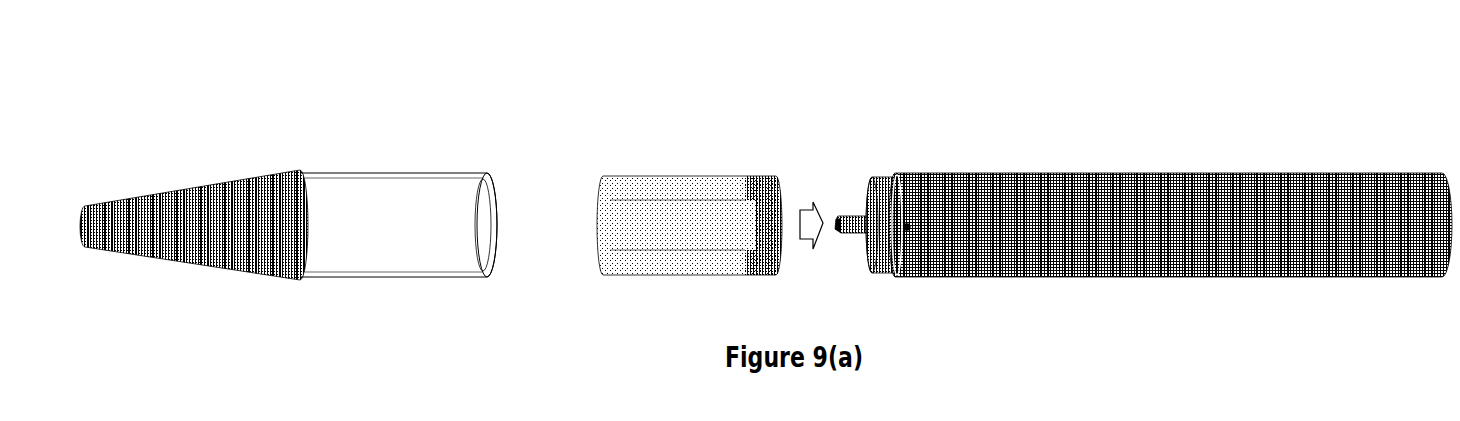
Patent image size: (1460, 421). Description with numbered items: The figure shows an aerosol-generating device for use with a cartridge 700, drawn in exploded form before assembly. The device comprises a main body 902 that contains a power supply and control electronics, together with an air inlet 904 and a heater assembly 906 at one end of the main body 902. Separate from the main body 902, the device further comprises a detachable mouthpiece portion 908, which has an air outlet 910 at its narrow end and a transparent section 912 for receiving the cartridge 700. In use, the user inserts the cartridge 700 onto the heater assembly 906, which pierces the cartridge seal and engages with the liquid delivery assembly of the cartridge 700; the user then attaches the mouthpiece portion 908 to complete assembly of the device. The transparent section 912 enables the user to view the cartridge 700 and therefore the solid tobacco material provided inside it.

The cartridge 700 is at (700, 200).
The main body 902 is at (1273, 193).
The air inlet 904 is at (907, 227).
The heater assembly 906 is at (885, 203).
The detachable mouthpiece portion 908 is at (288, 215).
The air outlet 910 is at (90, 227).
The transparent section 912 is at (432, 193).